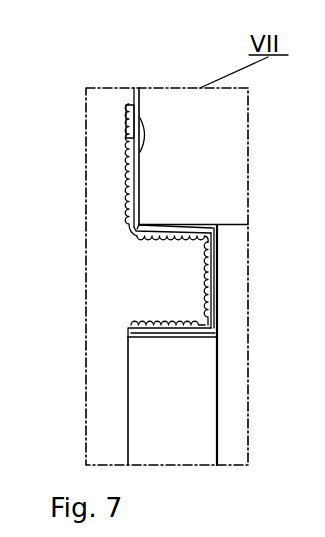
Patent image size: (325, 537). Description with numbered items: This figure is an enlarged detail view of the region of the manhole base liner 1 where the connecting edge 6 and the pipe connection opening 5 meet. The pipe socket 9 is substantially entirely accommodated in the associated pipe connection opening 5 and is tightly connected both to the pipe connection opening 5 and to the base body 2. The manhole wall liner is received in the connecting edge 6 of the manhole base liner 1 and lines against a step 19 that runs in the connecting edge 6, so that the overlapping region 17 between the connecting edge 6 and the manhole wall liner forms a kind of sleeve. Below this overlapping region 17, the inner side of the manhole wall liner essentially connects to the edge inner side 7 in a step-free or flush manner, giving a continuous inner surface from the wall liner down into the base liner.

The manhole base liner 1 is at (232, 375).
The base body 2 is at (212, 111).
The pipe connection opening 5 is at (215, 398).
The connecting edge 6 is at (128, 197).
The edge inner side 7 is at (141, 170).
The pipe socket 9 is at (128, 336).
The overlapping region 17 is at (113, 124).
The step 19 is at (141, 146).